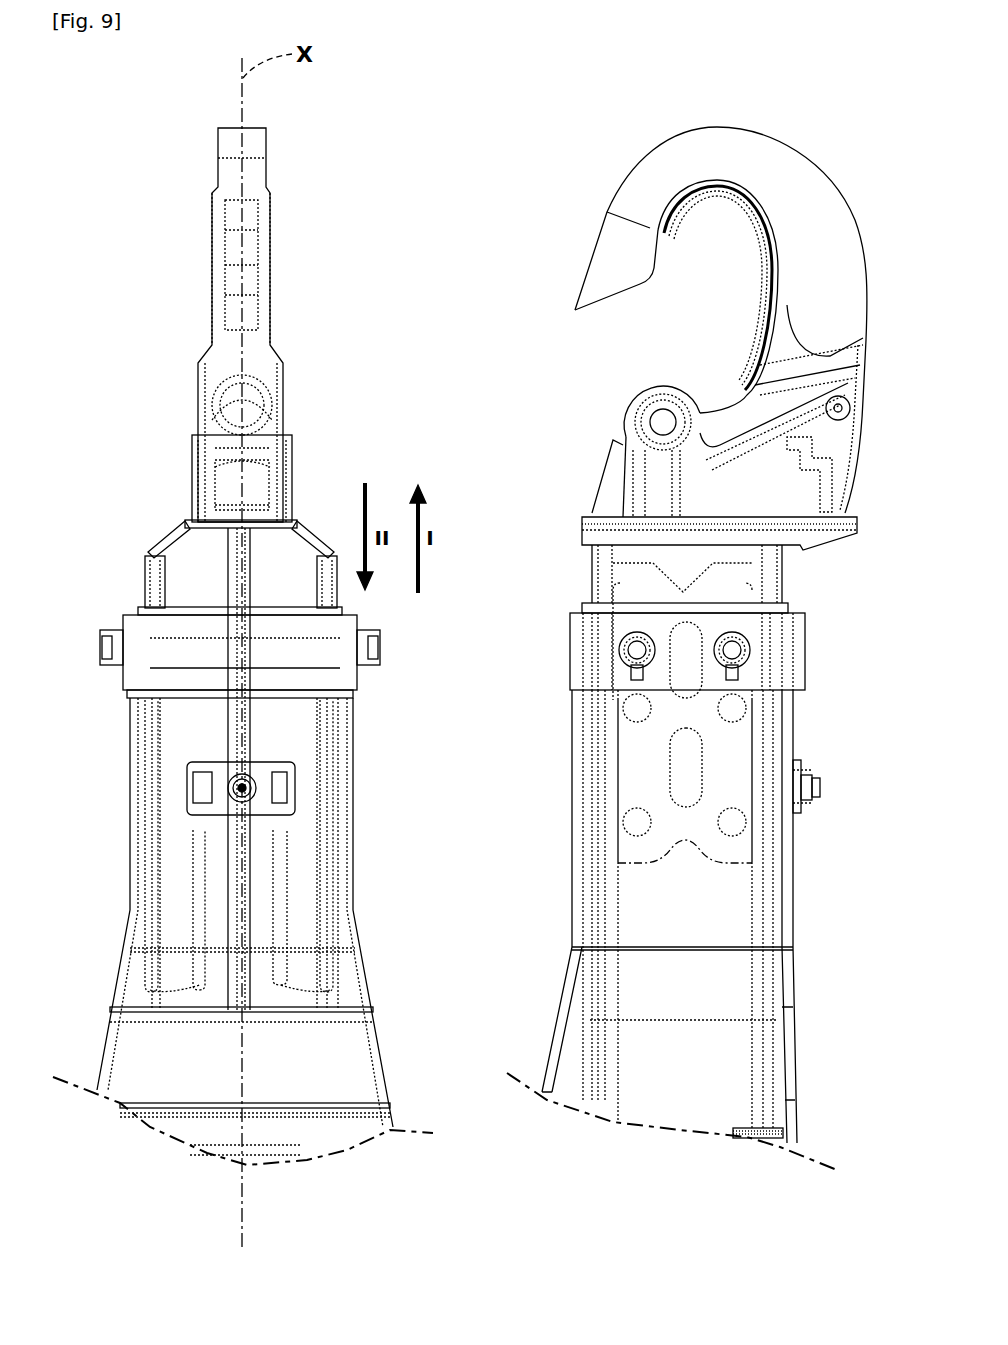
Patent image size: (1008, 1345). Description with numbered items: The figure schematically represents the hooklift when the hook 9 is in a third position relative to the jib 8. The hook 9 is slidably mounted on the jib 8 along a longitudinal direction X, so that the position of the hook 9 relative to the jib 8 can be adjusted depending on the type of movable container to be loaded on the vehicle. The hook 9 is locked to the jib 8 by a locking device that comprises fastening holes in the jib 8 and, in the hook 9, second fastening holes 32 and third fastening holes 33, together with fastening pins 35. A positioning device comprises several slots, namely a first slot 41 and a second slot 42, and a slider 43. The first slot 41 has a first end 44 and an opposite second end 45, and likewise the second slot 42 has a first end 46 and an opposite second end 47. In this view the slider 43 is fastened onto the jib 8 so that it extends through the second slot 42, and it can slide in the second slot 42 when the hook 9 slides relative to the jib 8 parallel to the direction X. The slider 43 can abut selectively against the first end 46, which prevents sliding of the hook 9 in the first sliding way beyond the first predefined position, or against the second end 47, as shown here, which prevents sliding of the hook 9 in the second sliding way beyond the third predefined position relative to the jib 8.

The jib 8 is at (542, 1055).
The hook 9 is at (582, 458).
The second fastening holes 32 is at (637, 822).
The third fastening holes 33 is at (637, 708).
The fastening pins 35 is at (380, 655).
The first slot 41 is at (200, 912).
The second slot 42 is at (283, 912).
The slider 43 is at (265, 788).
The first end 44 is at (200, 985).
The second end 45 is at (198, 827).
The first end 46 is at (280, 982).
The second end 47 is at (286, 767).